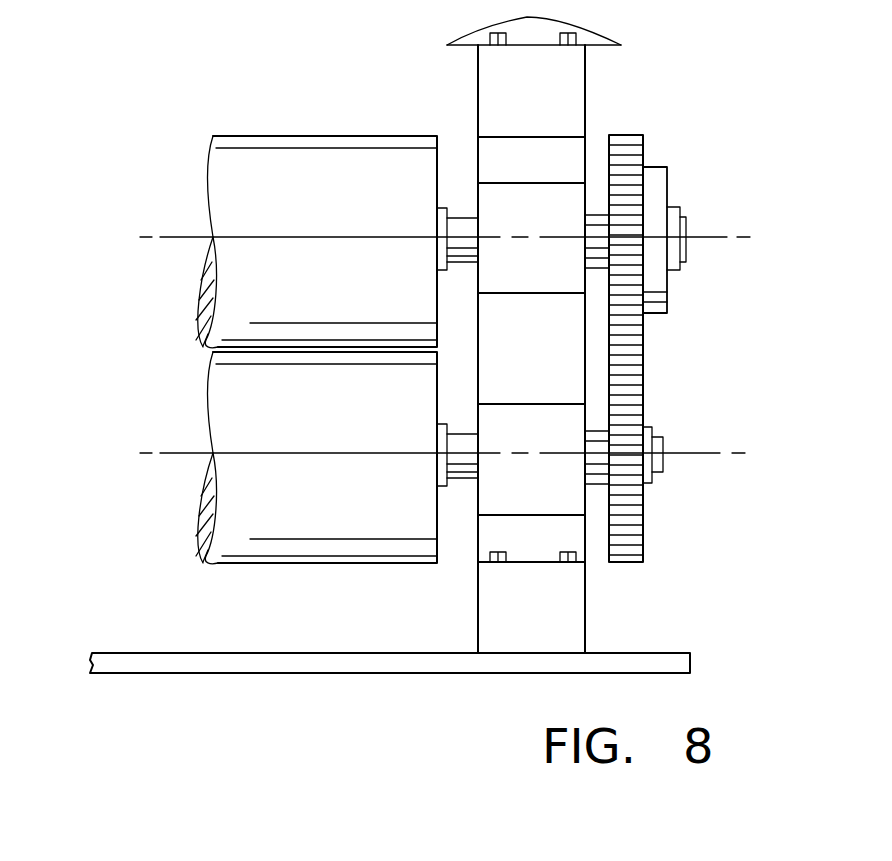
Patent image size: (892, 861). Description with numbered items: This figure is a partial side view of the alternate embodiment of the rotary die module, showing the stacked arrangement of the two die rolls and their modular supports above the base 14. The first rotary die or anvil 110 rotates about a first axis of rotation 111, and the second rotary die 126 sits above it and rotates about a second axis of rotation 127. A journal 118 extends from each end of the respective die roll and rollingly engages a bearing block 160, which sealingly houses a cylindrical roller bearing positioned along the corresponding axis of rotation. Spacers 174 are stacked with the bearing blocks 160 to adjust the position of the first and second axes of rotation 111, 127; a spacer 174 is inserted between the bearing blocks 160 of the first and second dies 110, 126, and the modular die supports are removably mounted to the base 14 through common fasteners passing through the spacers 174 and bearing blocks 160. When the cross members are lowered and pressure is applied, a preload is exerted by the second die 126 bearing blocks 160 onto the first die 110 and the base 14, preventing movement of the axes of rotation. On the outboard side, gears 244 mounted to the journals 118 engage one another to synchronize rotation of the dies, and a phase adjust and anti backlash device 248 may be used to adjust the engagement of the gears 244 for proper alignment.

The base 14 is at (262, 652).
The second rotary die 126 is at (275, 150).
The second axis of rotation 127 is at (178, 237).
The first rotary die or anvil 110 is at (228, 398).
The first axis of rotation 111 is at (179, 453).
The bearing block 160 is at (490, 203).
The spacer 174 is at (585, 68).
The gear 244 is at (645, 137).
The phase adjust and anti backlash device 248 is at (668, 175).
The journal 118 is at (684, 255).